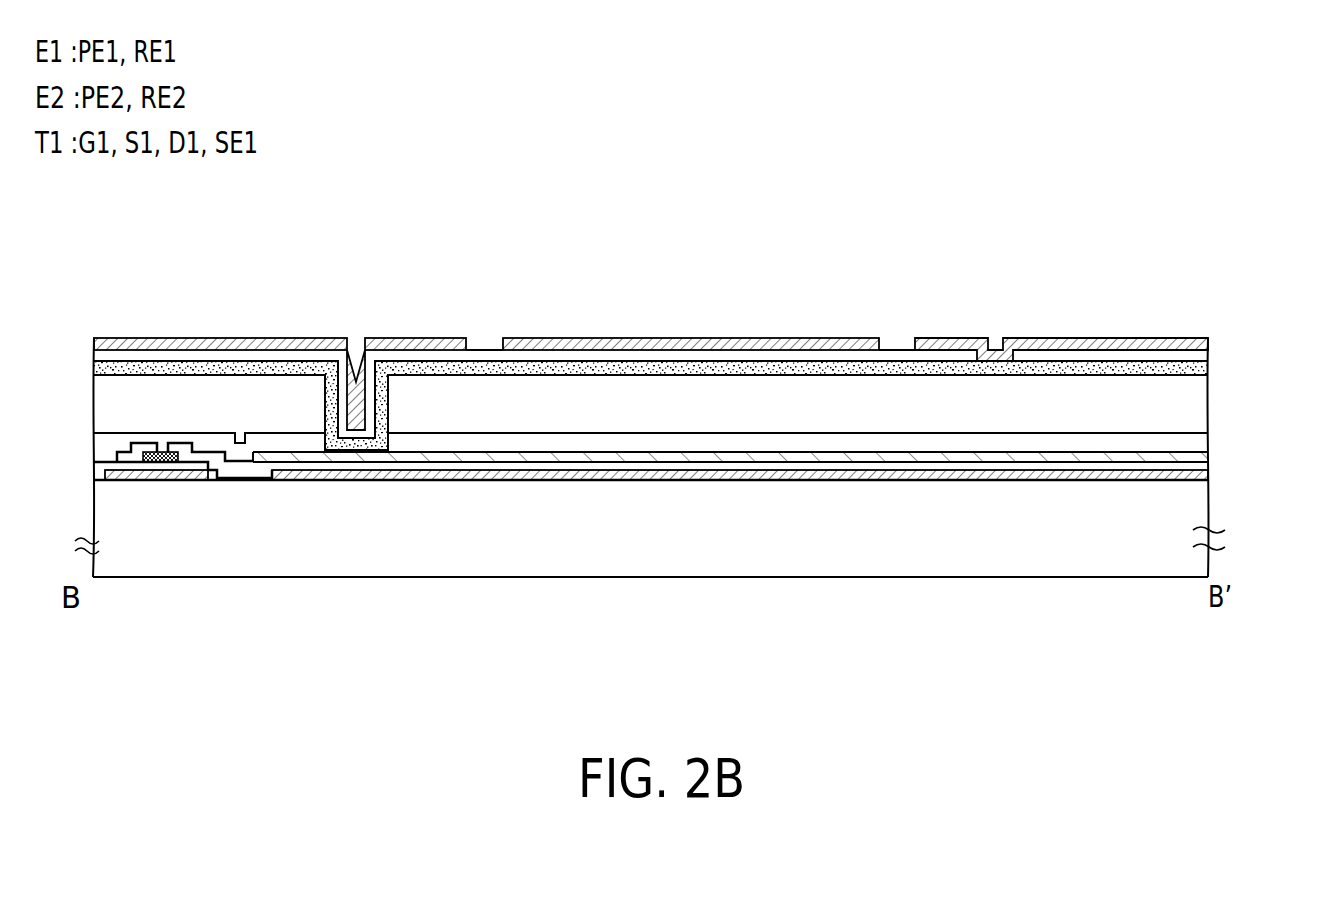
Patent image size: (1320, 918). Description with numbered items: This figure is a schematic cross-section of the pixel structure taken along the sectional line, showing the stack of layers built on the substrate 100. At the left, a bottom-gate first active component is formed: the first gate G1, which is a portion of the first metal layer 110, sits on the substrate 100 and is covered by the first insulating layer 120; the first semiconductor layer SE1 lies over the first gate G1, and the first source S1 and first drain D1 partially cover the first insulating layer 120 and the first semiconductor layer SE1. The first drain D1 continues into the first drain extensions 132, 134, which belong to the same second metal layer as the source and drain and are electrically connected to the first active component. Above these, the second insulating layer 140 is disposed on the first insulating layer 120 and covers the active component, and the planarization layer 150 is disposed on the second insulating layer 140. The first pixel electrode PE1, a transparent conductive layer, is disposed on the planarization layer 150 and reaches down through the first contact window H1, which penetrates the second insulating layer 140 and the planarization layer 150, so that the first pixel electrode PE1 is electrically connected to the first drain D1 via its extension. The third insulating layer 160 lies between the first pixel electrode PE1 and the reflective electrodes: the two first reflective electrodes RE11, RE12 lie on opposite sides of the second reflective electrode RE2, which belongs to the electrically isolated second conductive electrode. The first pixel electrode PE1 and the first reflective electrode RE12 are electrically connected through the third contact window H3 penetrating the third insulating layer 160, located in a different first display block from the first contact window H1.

The substrate 100 is at (1225, 529).
The first metal layer 110 is at (363, 476).
The first insulating layer 120 is at (242, 476).
The first drain extension 132 is at (605, 456).
The first drain extension 134 is at (1117, 457).
The second insulating layer 140 is at (703, 443).
The planarization layer 150 is at (790, 413).
The third insulating layer 160 is at (1172, 355).
The first gate G1 is at (175, 478).
The first source S1 is at (128, 458).
The first drain D1 is at (200, 449).
The first semiconductor layer SE1 is at (160, 459).
The first pixel electrode PE1 is at (177, 367).
The first reflective electrode RE11 is at (258, 345).
The first reflective electrode RE12 is at (1087, 346).
The second reflective electrode RE2 is at (723, 342).
The first contact window H1 is at (356, 372).
The third contact window H3 is at (996, 342).